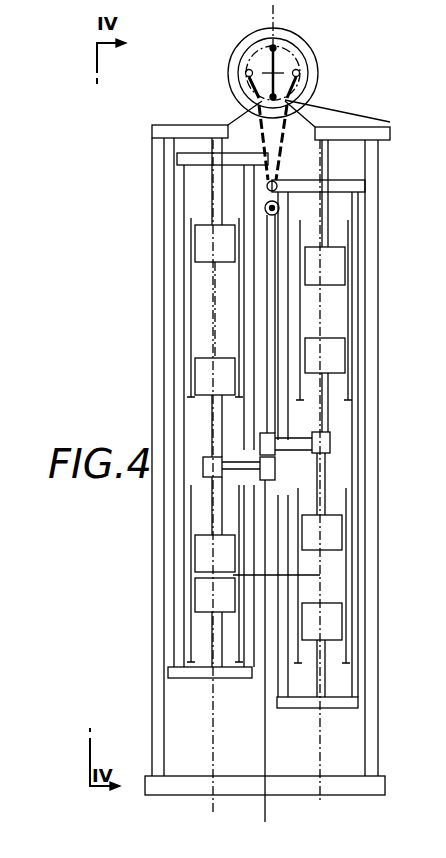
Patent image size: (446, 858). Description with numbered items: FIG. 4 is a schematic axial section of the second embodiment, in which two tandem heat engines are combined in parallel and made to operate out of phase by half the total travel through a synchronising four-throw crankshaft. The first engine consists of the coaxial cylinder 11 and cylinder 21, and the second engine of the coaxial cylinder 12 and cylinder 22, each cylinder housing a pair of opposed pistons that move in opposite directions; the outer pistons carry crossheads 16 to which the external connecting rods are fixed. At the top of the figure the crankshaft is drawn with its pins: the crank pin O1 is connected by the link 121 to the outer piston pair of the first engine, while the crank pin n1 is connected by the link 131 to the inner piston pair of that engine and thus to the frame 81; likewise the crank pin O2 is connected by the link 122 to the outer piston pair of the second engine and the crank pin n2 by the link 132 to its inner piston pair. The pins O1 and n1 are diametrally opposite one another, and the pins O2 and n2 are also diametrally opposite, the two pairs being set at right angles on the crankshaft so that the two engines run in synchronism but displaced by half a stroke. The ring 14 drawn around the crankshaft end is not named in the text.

The pulley ring 14 is at (241, 47).
The crankshaft pin O1 is at (152, 122).
The crankshaft pin O2 is at (245, 72).
The crankshaft pin n1 is at (288, 102).
The crankshaft pin n2 is at (240, 100).
The link 121 is at (300, 126).
The link 122 is at (236, 113).
The link 131 is at (343, 142).
The link 132 is at (284, 146).
The crosshead 16 is at (182, 158).
The cylinder 11 is at (215, 317).
The cylinder 12 is at (185, 309).
The cylinder 21 is at (207, 573).
The cylinder 22 is at (320, 577).
The frame 81 is at (445, 595).